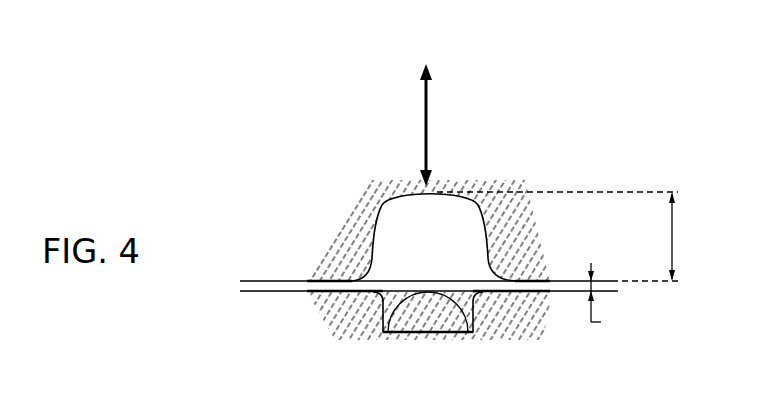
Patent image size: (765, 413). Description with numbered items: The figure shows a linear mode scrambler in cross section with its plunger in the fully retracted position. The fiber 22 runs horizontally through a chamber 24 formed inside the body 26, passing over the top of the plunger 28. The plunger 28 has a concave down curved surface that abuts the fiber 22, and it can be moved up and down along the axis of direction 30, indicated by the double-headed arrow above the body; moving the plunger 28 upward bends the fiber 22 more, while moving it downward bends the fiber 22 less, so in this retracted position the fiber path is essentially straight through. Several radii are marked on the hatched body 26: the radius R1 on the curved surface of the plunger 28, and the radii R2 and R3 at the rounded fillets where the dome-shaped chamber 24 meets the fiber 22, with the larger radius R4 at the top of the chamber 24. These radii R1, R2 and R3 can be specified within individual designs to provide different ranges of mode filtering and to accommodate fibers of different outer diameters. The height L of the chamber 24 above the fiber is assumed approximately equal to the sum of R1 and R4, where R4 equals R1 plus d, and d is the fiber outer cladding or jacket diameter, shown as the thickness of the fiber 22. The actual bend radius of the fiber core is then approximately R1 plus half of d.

The fiber 22 is at (267, 277).
The chamber 24 is at (397, 253).
The body 26 is at (358, 193).
The plunger 28 is at (453, 315).
The axis of direction 30 is at (426, 122).
The radius R1 is at (446, 301).
The radius R2 is at (494, 255).
The radius R3 is at (362, 257).
The radius R4 is at (426, 194).
The length L is at (566, 236).
The fiber outer cladding or jacket diameter d is at (603, 300).